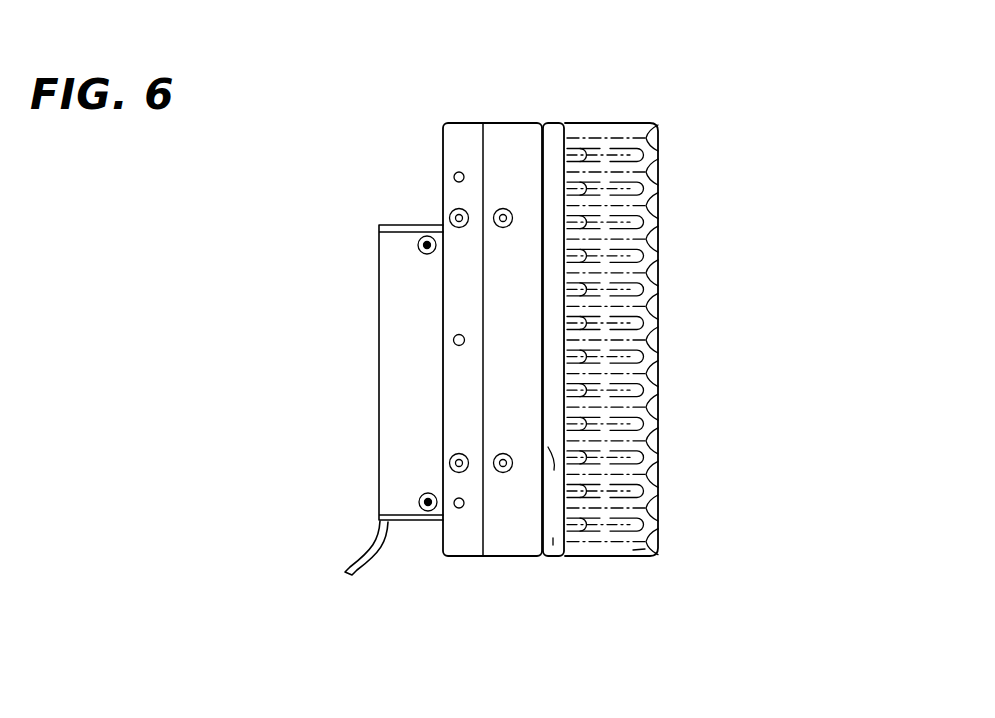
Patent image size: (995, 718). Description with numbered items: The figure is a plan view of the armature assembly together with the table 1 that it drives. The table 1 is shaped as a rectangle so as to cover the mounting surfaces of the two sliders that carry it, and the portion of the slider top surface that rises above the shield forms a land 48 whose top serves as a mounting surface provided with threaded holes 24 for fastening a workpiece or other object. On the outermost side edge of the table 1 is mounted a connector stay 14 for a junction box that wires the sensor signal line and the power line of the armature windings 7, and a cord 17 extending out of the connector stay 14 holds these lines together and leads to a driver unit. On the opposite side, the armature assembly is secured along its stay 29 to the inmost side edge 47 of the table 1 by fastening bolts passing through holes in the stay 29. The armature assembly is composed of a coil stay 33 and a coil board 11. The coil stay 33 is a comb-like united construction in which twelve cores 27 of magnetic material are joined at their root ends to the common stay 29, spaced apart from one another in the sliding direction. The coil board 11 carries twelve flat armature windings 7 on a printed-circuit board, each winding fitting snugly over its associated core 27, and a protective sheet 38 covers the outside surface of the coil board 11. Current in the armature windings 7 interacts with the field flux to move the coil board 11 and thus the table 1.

The table 1 is at (517, 143).
The armature windings 7 is at (647, 225).
The coil board 11 is at (643, 128).
The connector stay 14 is at (400, 357).
The cord 17 is at (368, 547).
The threaded holes 24 is at (452, 173).
The core 27 is at (627, 428).
The stay 29 is at (552, 135).
The coil stay 33 is at (553, 538).
The protective sheet 38 is at (633, 550).
The inmost side edge 47 is at (548, 447).
The land 48 is at (457, 285).